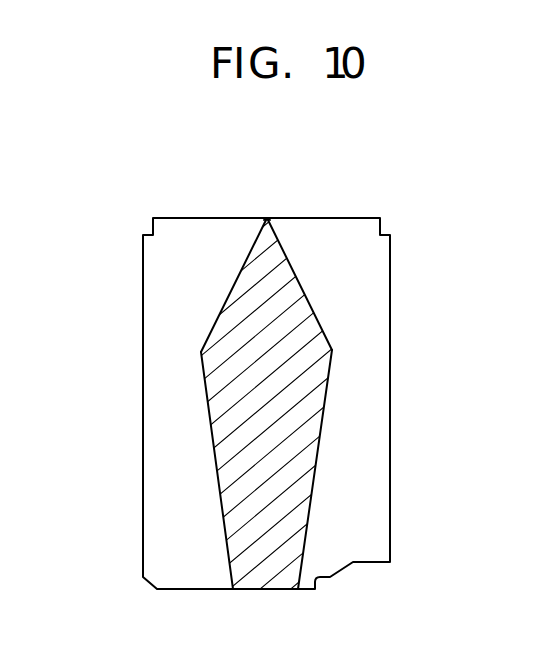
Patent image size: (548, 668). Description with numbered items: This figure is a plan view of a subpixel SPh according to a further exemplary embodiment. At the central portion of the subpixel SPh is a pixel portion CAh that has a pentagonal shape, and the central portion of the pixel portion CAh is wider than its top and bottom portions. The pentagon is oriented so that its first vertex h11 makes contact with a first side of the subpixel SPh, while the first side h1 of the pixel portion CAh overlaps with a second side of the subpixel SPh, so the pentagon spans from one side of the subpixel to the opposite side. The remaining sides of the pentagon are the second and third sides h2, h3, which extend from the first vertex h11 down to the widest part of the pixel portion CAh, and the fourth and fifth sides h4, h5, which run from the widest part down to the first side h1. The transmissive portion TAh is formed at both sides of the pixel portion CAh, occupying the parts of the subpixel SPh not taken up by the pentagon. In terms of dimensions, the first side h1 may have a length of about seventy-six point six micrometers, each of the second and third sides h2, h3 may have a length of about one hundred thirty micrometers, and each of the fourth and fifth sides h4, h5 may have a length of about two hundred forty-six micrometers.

The subpixel SPh is at (225, 365).
The transmissive portion TAh is at (165, 435).
The pixel portion CAh is at (231, 377).
The first side h1 is at (264, 589).
The second side h2 is at (236, 277).
The third side h3 is at (298, 277).
The fourth side h4 is at (224, 533).
The fifth side h5 is at (305, 533).
The first vertex h11 is at (267, 218).